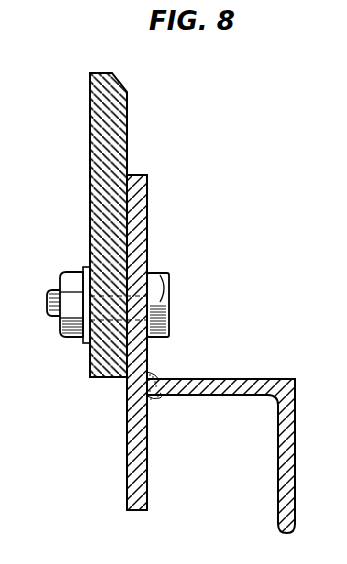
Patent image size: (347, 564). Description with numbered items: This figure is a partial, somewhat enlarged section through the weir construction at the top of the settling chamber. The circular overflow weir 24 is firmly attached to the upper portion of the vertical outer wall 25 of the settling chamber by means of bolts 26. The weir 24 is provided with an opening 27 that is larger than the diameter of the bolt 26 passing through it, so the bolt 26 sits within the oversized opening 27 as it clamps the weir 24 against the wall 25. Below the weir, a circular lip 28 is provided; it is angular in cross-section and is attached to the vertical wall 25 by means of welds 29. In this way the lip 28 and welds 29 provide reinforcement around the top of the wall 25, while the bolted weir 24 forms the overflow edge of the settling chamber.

The circular overflow weir 24 is at (107, 143).
The vertical outer wall 25 is at (137, 188).
The bolt 26 is at (155, 292).
The opening 27 is at (146, 250).
The circular lip 28 is at (250, 381).
The weld 29 is at (160, 397).